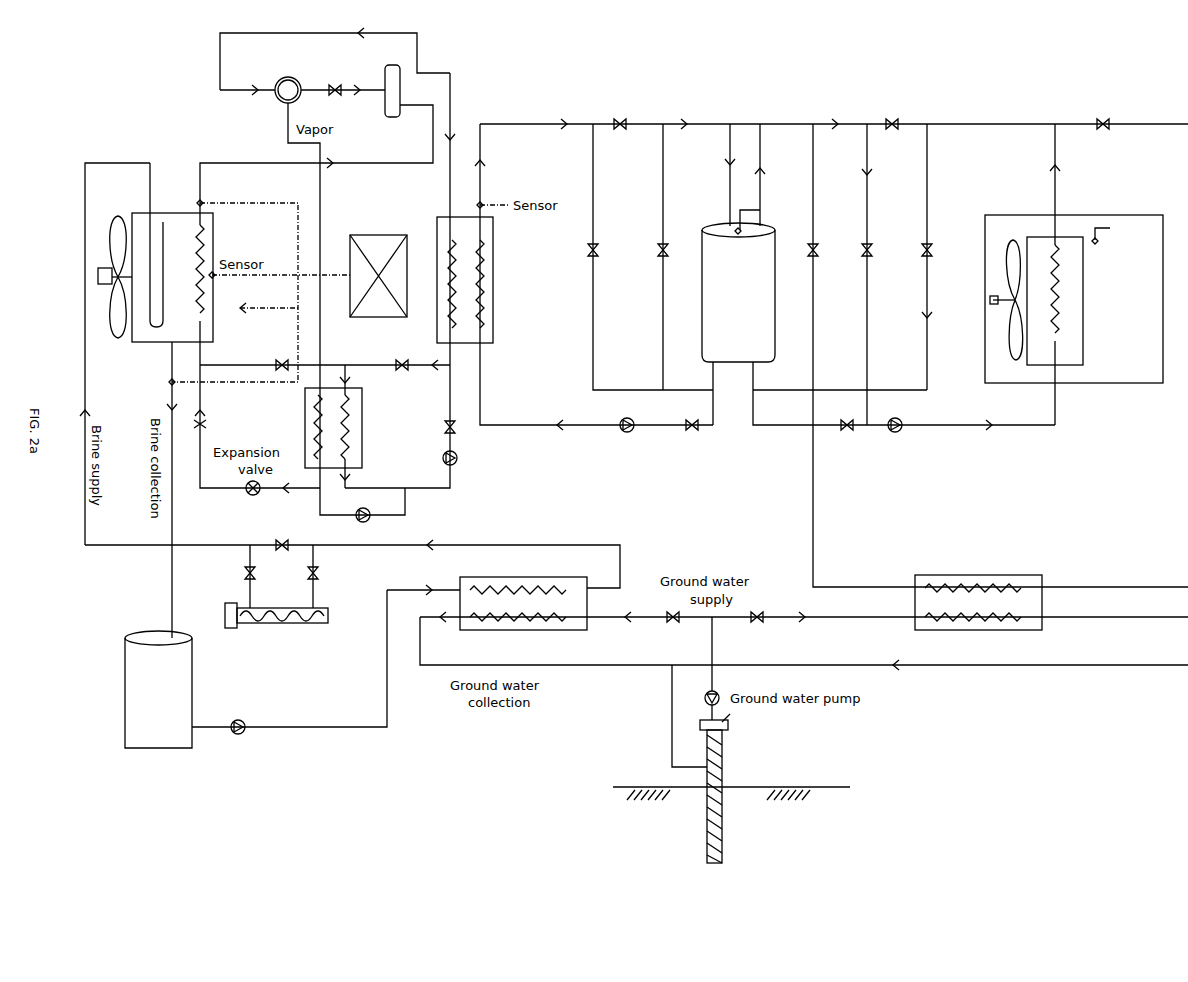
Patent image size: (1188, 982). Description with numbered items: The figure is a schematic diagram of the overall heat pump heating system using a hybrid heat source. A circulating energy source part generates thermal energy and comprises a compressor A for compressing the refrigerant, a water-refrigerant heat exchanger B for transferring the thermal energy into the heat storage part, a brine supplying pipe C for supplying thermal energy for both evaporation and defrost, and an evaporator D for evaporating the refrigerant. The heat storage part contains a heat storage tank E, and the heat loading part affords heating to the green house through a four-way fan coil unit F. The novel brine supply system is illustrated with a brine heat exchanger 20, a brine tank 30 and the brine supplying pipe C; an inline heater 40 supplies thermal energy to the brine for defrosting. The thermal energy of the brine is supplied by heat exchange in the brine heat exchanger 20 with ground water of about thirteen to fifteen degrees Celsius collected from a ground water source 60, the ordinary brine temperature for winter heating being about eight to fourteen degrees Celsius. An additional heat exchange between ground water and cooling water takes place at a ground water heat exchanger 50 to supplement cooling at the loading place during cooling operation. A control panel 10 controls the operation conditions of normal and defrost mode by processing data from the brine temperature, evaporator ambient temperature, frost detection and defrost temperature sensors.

The control panel 10 is at (367, 259).
The brine heat exchanger 20 is at (516, 612).
The brine tank 30 is at (146, 702).
The inline heater 40 is at (267, 599).
The ground water heat exchanger 50 is at (973, 583).
The ground water source 60 is at (754, 788).
The compressor A is at (335, 72).
The water-refrigerant heat exchanger B is at (485, 285).
The brine supplying pipe C is at (150, 233).
The evaporator D is at (155, 277).
The heat storage tank E is at (748, 243).
The 4-way fan coil unit F is at (1074, 296).